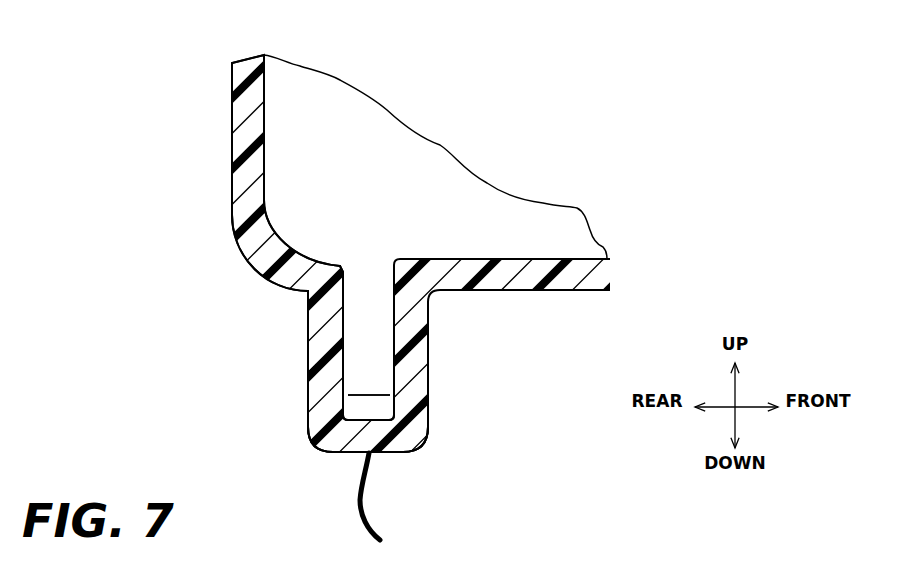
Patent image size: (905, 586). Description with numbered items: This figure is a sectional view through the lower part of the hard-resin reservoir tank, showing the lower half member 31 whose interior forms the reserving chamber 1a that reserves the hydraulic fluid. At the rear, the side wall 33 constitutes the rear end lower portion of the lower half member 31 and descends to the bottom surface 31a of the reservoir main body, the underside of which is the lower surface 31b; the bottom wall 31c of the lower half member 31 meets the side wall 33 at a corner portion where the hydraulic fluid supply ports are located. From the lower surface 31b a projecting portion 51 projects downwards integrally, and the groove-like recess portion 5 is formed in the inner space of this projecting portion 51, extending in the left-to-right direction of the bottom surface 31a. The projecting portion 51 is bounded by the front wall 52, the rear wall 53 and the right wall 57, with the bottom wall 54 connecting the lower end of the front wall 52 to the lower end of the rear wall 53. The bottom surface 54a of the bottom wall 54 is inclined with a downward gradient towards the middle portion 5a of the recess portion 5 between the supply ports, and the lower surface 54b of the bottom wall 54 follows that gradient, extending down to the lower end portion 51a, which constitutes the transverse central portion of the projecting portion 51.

The lower half member 31 is at (215, 102).
The side wall 33 is at (232, 147).
The reserving chamber 1a is at (302, 113).
The recess portion 5 is at (370, 258).
The middle portion 5a is at (375, 416).
The bottom surface 31a is at (545, 259).
The lower surface 31b is at (553, 291).
The bottom wall 31c is at (600, 275).
The rear wall 53 is at (318, 347).
The right wall 57 is at (429, 340).
The front wall 52 is at (417, 380).
The projecting portion 51 is at (455, 408).
The bottom wall 54 is at (362, 440).
The bottom surface 54a is at (362, 408).
The lower end portion 51a is at (387, 452).
The lower surface 54b is at (395, 507).